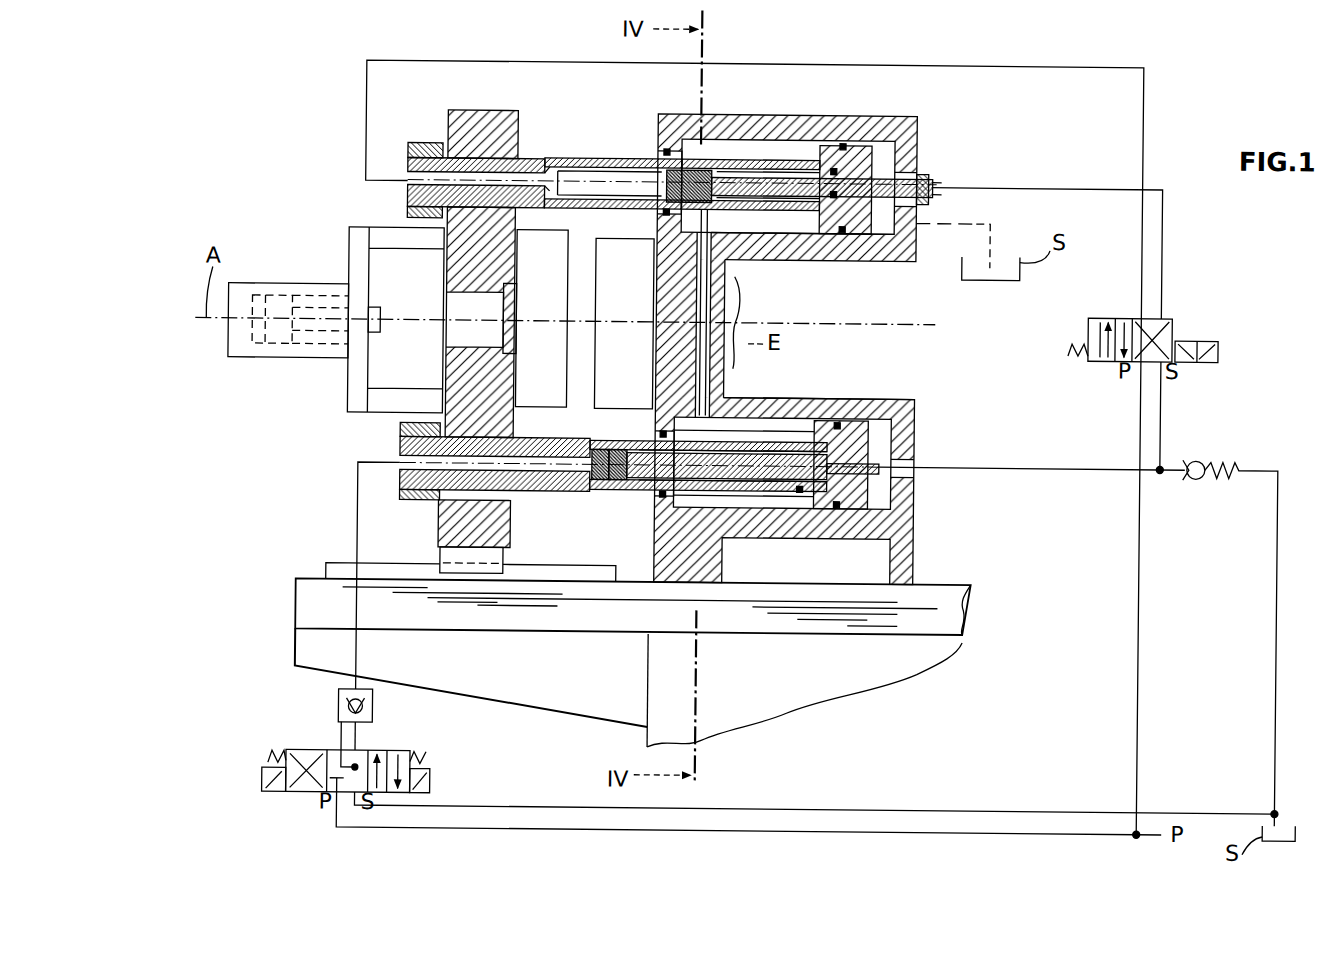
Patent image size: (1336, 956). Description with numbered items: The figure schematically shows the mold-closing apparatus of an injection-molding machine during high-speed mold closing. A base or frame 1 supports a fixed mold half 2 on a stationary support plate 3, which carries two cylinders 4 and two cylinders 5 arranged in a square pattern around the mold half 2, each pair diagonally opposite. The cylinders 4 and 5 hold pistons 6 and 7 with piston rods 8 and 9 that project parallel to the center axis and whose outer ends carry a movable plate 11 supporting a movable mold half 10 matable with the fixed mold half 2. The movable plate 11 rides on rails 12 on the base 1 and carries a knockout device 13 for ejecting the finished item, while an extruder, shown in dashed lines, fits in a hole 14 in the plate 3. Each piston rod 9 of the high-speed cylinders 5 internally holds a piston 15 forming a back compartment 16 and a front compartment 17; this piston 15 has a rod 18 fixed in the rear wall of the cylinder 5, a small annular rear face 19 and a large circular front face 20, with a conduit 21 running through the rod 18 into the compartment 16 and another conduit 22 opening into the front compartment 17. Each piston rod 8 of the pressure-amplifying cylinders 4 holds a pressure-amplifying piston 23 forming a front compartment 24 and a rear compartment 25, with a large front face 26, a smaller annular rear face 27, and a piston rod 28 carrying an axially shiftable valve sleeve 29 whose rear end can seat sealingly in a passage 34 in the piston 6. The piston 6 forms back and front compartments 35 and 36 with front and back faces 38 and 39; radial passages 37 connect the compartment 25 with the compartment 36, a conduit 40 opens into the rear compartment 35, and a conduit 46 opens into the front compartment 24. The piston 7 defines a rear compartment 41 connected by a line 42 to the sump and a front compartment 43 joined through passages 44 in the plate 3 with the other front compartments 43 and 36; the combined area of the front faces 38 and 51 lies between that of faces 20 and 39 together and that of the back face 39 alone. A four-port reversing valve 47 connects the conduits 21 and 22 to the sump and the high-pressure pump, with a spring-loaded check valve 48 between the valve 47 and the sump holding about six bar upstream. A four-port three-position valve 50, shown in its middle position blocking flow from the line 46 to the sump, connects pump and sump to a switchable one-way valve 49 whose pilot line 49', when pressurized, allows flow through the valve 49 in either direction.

The base or frame 1 is at (952, 612).
The fixed mold half 2 is at (632, 363).
The stationary support plate 3 is at (656, 265).
The cylinder 4 is at (900, 422).
The cylinder 5 is at (912, 136).
The piston 6 is at (905, 498).
The piston 7 is at (843, 158).
The piston rod 8 is at (522, 492).
The piston rod 9 is at (520, 160).
The movable mold half 10 is at (552, 363).
The movable plate 11 is at (500, 268).
The rails 12 is at (339, 571).
The knockout device 13 is at (305, 291).
The hole 14 is at (738, 300).
The piston 15 is at (698, 158).
The back compartment 16 is at (723, 163).
The front compartment 17 is at (558, 160).
The rod 18 is at (768, 166).
The small annular rear face 19 is at (710, 200).
The large circular front face 20 is at (648, 165).
The conduit 21 is at (1161, 234).
The conduit 22 is at (364, 130).
The pressure-amplifying piston 23 is at (622, 492).
The front compartment 24 is at (590, 482).
The rear compartment 25 is at (704, 478).
The large-size front face 26 is at (590, 457).
The smaller annular rear face 27 is at (646, 457).
The piston rod 28 is at (734, 465).
The valve sleeve 29 is at (823, 448).
The passage 34 is at (866, 448).
The back compartment 35 is at (895, 452).
The front compartment 36 is at (798, 430).
The radial passages 37 is at (801, 419).
The front face 38 is at (811, 497).
The back face 39 is at (905, 397).
The conduit 40 is at (1092, 467).
The rear compartment 41 is at (878, 220).
The line 42 is at (989, 221).
The front compartment 43 is at (805, 221).
The passages 44 is at (670, 278).
The conduit 46 is at (359, 508).
The four-port reversing valve 47 is at (1225, 317).
The check valve 48 is at (1220, 431).
The switchable one-way valve 49 is at (309, 714).
The pilot port 49' is at (318, 744).
The four-port three-position valve 50 is at (440, 750).
The front face 51 is at (793, 168).